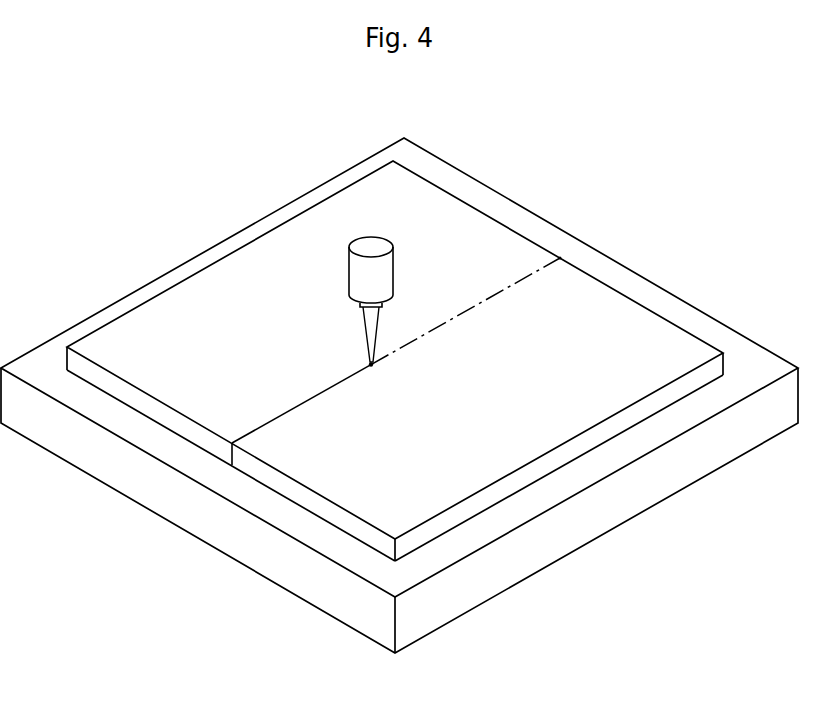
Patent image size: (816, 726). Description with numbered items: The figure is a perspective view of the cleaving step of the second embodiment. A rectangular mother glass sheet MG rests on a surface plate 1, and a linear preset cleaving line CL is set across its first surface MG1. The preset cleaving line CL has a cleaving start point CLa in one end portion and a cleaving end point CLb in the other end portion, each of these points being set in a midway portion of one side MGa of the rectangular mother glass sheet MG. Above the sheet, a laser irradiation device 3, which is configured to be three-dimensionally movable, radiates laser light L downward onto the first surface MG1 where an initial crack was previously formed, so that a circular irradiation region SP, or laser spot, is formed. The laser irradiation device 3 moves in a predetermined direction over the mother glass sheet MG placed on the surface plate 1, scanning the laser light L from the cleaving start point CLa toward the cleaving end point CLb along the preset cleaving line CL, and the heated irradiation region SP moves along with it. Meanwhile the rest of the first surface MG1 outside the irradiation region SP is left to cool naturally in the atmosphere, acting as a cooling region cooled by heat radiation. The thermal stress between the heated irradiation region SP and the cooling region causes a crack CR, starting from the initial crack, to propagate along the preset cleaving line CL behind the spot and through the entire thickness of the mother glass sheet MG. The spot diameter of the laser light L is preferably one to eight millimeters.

The surface plate 1 is at (647, 483).
The laser irradiation device 3 is at (370, 247).
The mother glass sheet MG is at (366, 387).
The side of the mother glass sheet MGa is at (135, 306).
The first surface MG1 is at (233, 282).
The preset cleaving line CL is at (480, 300).
The cleaving start point CLa is at (233, 444).
The cleaving end point CLb is at (560, 258).
The crack CR is at (292, 410).
The laser light L is at (378, 335).
The irradiation region SP is at (373, 366).